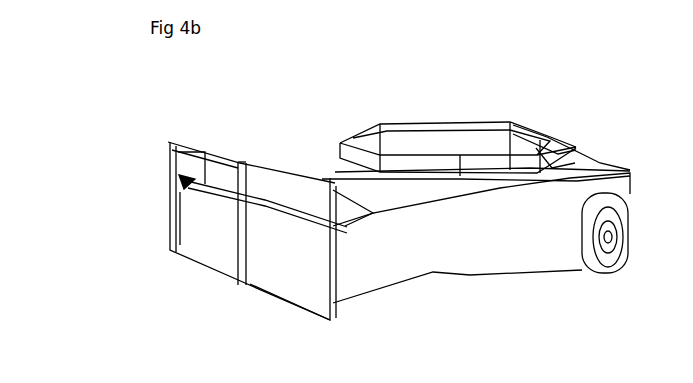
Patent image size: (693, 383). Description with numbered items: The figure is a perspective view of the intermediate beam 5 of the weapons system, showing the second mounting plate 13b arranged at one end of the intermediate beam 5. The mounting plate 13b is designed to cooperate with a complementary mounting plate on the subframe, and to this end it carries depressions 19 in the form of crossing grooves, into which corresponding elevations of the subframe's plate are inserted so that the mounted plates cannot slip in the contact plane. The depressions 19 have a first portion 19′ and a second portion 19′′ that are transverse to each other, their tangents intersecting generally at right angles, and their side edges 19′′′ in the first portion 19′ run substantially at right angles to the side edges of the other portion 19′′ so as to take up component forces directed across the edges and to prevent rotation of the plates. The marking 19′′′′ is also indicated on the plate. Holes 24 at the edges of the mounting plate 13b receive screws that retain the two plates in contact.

The intermediate beam 5 is at (325, 140).
The second mounting plate 13b is at (205, 150).
The depressions 19 is at (187, 182).
The first portion of depressions 19′ is at (242, 163).
The second portion of depressions 19′′ is at (197, 174).
The side edges of depressions 19′′′ is at (242, 240).
The connection element arrow 19′′′′ is at (186, 178).
The holes 24 is at (247, 287).